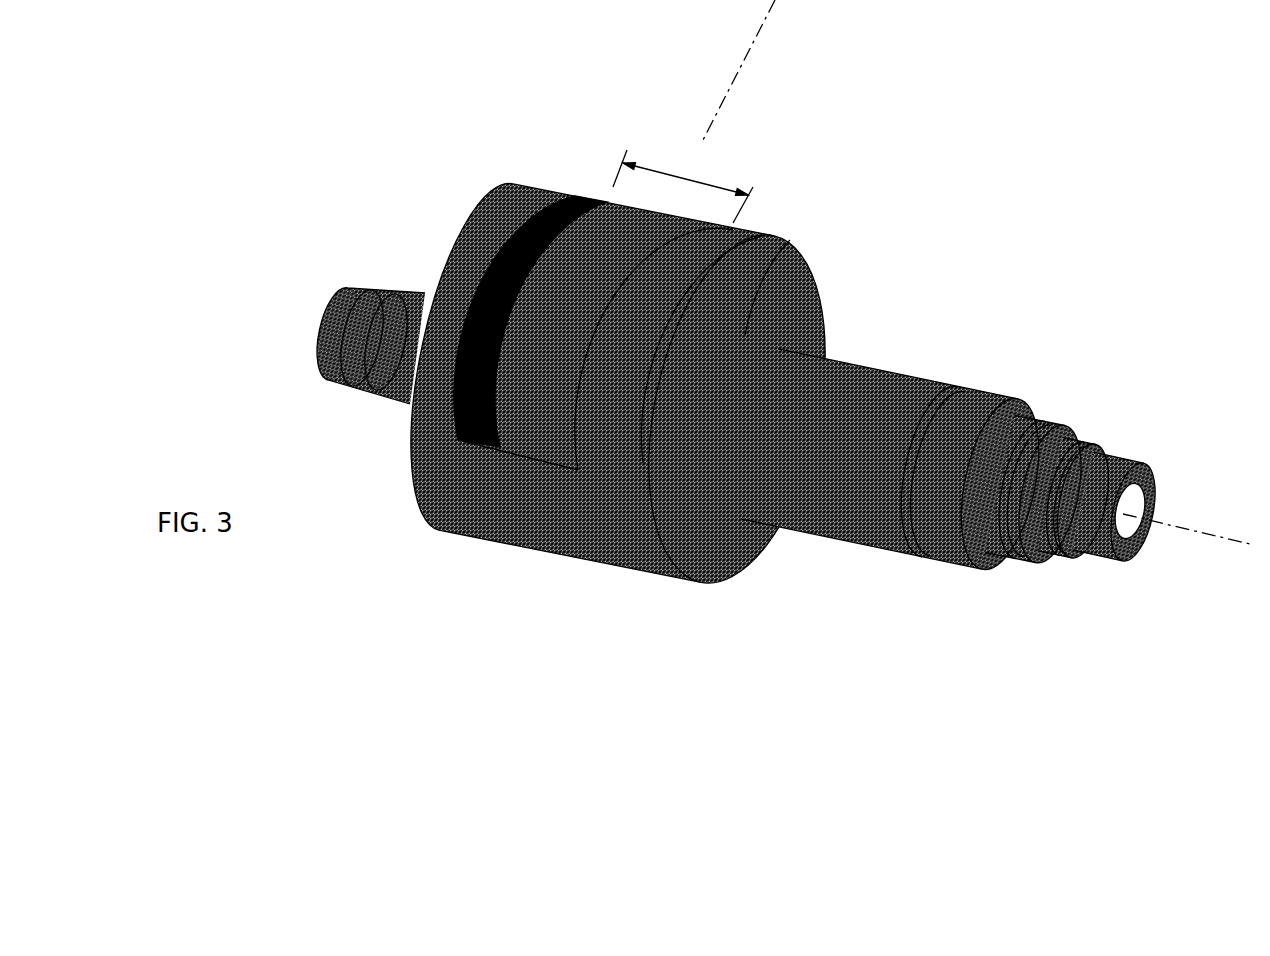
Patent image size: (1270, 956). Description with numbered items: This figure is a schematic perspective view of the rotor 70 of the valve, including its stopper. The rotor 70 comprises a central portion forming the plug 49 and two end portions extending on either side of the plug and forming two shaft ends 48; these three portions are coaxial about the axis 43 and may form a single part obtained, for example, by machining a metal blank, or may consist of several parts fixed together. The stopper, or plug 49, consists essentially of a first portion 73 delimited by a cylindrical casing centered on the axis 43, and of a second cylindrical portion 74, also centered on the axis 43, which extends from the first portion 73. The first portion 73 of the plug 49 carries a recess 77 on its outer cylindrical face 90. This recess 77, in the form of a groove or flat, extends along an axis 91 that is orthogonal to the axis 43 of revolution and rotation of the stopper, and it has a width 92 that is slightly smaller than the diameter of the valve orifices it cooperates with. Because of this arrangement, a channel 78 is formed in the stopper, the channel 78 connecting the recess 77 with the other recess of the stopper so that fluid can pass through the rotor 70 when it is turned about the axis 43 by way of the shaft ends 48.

The rotor 70 is at (345, 148).
The axis of the recess 91 is at (758, 42).
The width of the recess 92 is at (683, 186).
The channel 78 is at (767, 287).
The shaft ends 48 is at (372, 287).
The outer cylindrical face 90 is at (420, 438).
The recess 77 is at (432, 520).
The first portion 73 is at (428, 565).
The second cylindrical portion 74 is at (932, 526).
The plug 49 is at (750, 436).
The axis 43 is at (1226, 541).